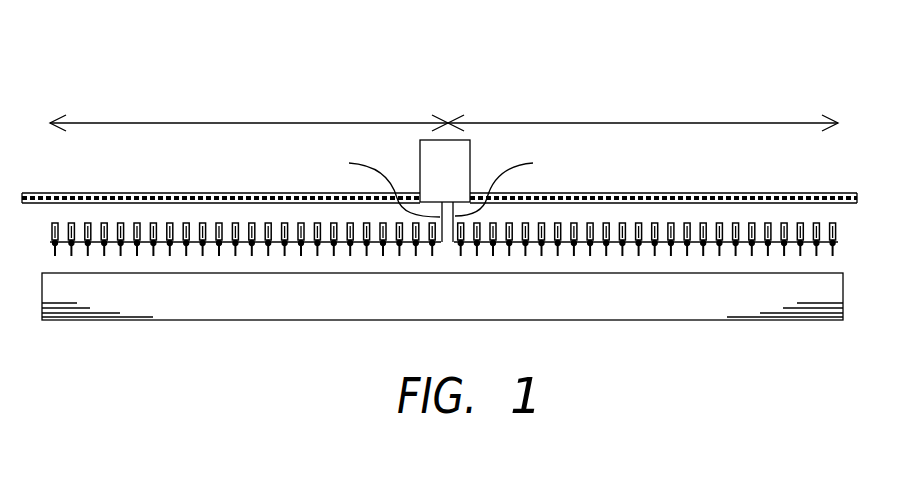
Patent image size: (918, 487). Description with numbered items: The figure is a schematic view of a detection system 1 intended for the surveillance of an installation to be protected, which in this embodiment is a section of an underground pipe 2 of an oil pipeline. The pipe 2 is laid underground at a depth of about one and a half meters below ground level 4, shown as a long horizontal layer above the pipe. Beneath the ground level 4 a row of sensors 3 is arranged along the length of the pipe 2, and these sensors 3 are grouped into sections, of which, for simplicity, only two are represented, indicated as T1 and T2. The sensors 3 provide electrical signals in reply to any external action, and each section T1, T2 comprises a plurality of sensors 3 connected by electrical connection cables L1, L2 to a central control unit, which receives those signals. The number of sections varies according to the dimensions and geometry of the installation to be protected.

The detection system 1 is at (134, 55).
The underground pipe 2 is at (215, 310).
The sensors 3 is at (286, 225).
The ground level 4 is at (750, 193).
The first section of sensors T1 is at (249, 107).
The second section of sensors T2 is at (643, 107).
The first electrical connection cable L1 is at (378, 181).
The second electrical connection cable L2 is at (510, 181).